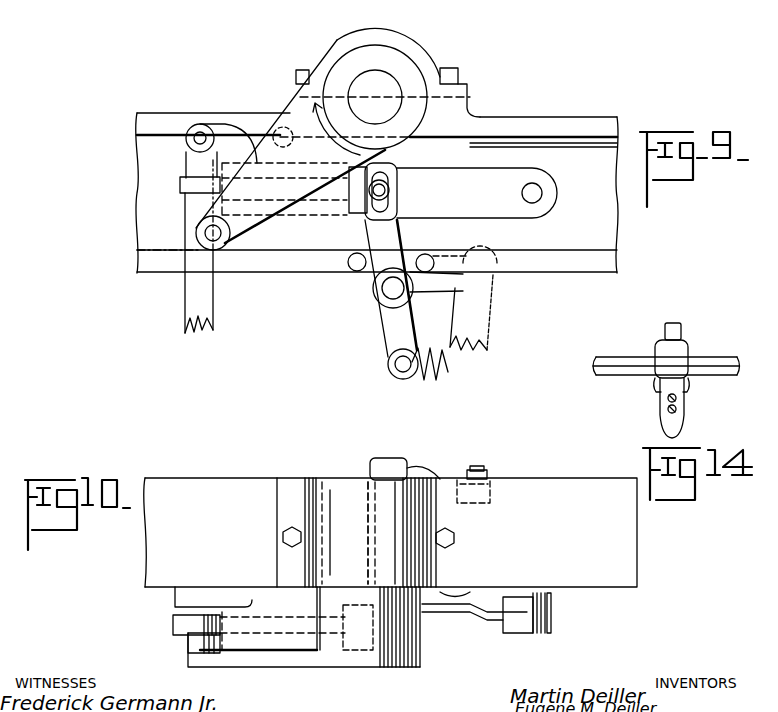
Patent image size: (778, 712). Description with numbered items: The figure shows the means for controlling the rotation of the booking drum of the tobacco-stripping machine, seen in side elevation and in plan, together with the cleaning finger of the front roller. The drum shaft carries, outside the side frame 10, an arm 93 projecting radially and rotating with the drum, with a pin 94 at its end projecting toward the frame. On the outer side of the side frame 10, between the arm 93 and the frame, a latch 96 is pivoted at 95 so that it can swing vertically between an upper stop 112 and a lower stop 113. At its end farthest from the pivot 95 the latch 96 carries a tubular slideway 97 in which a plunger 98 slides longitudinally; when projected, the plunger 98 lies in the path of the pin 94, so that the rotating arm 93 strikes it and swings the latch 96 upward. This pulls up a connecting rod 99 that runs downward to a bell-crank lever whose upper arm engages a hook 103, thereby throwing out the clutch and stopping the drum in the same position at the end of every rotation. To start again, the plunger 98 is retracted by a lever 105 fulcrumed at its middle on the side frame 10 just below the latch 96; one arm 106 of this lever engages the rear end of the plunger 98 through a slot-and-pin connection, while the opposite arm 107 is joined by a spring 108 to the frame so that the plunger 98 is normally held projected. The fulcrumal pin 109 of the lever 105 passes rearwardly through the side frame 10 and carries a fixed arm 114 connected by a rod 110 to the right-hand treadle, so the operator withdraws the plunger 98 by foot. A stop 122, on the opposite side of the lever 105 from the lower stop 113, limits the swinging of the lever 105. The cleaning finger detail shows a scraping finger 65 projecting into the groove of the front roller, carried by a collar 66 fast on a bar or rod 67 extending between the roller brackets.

In FIG. 9, the side frame 10 is at (397, 193).
In FIG. 10, the side frame 10 is at (390, 532).
In FIG. 14, the scraping finger 65 is at (665, 421).
In FIG. 14, the collar 66 is at (679, 357).
In FIG. 14, the bar or rod 67 is at (705, 377).
In FIG. 9, the arm 93 is at (284, 112).
In FIG. 10, the arm 93 is at (297, 662).
In FIG. 9, the pin 94 is at (197, 233).
In FIG. 10, the pin 94 is at (193, 646).
In FIG. 9, the pivot 95 is at (545, 191).
In FIG. 10, the pivot 95 is at (525, 640).
In FIG. 9, the latch 96 is at (477, 193).
In FIG. 10, the latch 96 is at (445, 603).
In FIG. 9, the tubular slideway 97 is at (314, 210).
In FIG. 10, the tubular slideway 97 is at (260, 618).
In FIG. 9, the plunger 98 is at (183, 193).
In FIG. 10, the plunger 98 is at (175, 624).
In FIG. 9, the connecting rod 99 is at (193, 297).
In FIG. 9, the hook 103 is at (398, 292).
In FIG. 9, the lever 105 is at (374, 271).
In FIG. 9, the arm 106 is at (393, 232).
In FIG. 10, the arm 106 is at (360, 635).
In FIG. 9, the arm 107 is at (406, 330).
In FIG. 9, the spring 108 is at (442, 382).
In FIG. 10, the fulcrumal pin 109 is at (367, 530).
In FIG. 9, the rod 110 is at (488, 317).
In FIG. 10, the rod 110 is at (491, 475).
In FIG. 9, the stop 112 is at (268, 128).
In FIG. 9, the stop 113 is at (354, 271).
In FIG. 9, the fixed arm 114 is at (453, 271).
In FIG. 10, the fixed arm 114 is at (410, 465).
In FIG. 9, the stop 122 is at (433, 256).